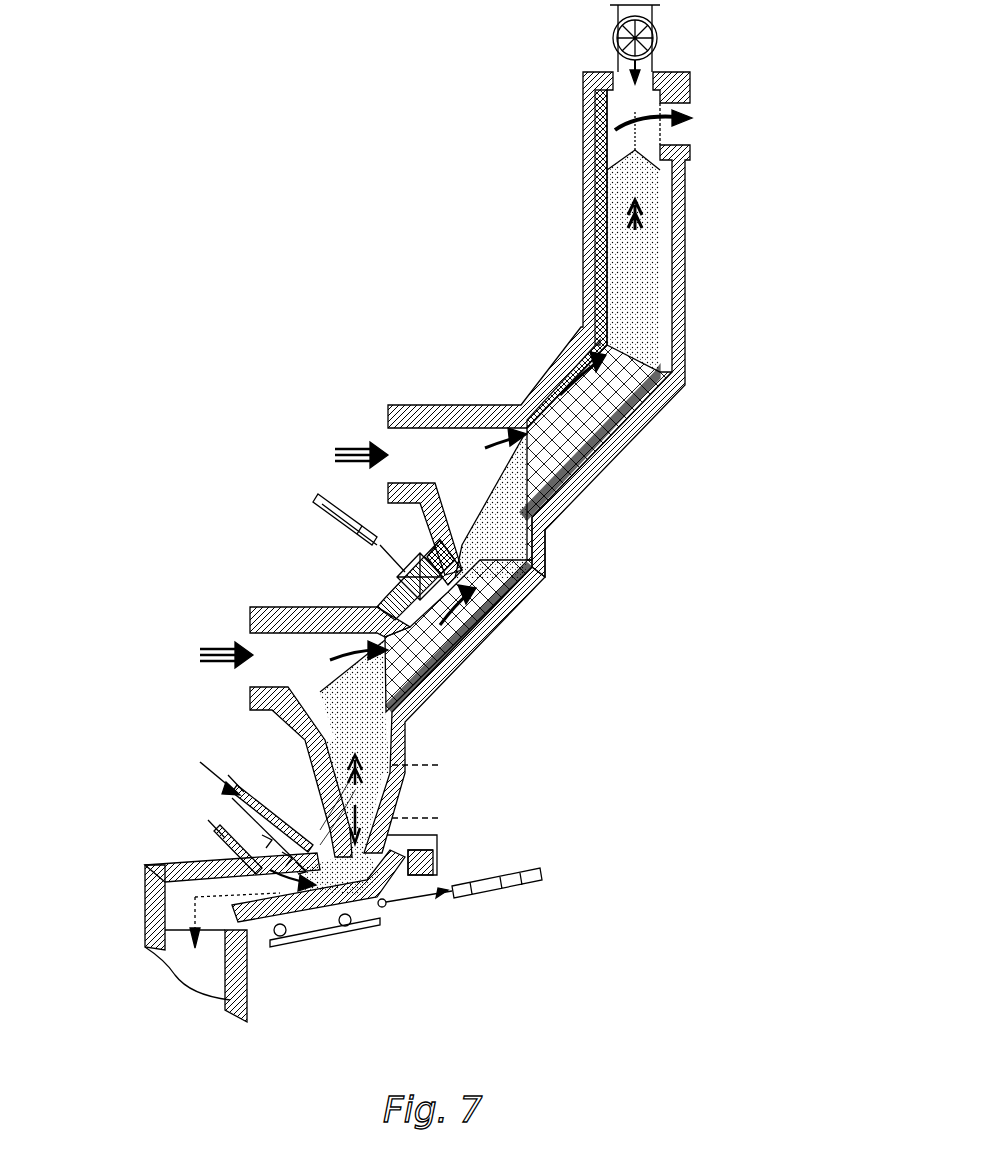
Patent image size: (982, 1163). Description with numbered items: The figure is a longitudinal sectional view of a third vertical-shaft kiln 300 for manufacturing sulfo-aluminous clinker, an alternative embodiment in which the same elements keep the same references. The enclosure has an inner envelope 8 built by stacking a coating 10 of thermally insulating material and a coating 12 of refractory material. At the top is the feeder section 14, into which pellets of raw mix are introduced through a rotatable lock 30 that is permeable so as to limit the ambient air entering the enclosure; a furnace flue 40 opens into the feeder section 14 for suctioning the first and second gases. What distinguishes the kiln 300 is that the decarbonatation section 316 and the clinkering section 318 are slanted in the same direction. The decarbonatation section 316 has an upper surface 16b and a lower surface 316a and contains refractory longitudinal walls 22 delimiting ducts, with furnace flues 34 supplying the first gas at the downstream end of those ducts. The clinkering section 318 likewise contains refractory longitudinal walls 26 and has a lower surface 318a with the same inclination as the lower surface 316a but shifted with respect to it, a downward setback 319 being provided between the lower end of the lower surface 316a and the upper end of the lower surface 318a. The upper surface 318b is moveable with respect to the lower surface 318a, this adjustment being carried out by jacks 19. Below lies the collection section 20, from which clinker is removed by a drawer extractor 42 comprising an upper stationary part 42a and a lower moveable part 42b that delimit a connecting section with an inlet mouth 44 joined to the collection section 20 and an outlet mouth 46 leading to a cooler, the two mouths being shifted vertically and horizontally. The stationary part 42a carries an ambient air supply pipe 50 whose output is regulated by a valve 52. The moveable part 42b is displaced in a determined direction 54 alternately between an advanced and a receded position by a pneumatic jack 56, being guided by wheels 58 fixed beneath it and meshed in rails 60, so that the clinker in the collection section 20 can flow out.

The third vertical-shaft kiln 300 is at (343, 152).
The inner envelope 8 is at (539, 324).
The coating in a thermally insulating material 10 is at (588, 118).
The coating in a refractory material 12 is at (592, 158).
The feeder section 14 is at (578, 324).
The upper surface of the decarbonatation section 16b is at (546, 360).
The jacks 19 is at (320, 497).
The collection section 20 is at (440, 765).
The longitudinal walls 22 is at (680, 372).
The longitudinal walls 26 is at (405, 683).
The lock 30 is at (613, 35).
The furnace flues 34 is at (380, 440).
The furnace flue 40 is at (692, 118).
The drawer extractor 42 is at (423, 940).
The upper stationary part 42a is at (163, 862).
The lower moveable part 42b is at (300, 922).
The inlet mouth 44 is at (314, 762).
The outlet mouth 46 is at (143, 905).
The ambient air supply pipe 50 is at (222, 824).
The valve 52 is at (238, 792).
The determined direction 54 is at (442, 893).
The pneumatic jack 56 is at (503, 906).
The wheels 58 is at (350, 926).
The rails 60 is at (318, 938).
The decarbonatation section 316 is at (720, 428).
The lower surface of the decarbonatation section 316a is at (614, 472).
The clinkering section 318 is at (507, 795).
The lower surface of the clinkering section 318a is at (494, 640).
The upper surface of the clinkering section 318b is at (472, 665).
The downward setback 319 is at (550, 578).